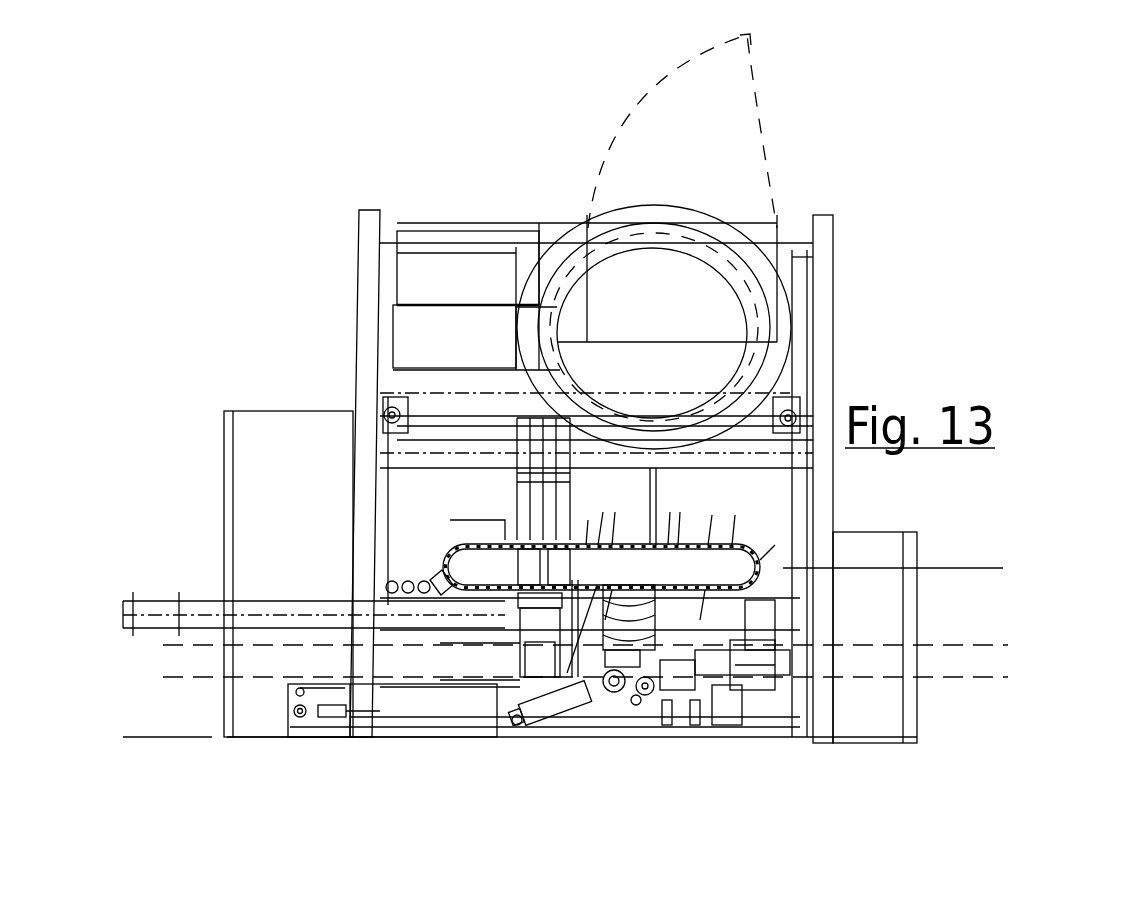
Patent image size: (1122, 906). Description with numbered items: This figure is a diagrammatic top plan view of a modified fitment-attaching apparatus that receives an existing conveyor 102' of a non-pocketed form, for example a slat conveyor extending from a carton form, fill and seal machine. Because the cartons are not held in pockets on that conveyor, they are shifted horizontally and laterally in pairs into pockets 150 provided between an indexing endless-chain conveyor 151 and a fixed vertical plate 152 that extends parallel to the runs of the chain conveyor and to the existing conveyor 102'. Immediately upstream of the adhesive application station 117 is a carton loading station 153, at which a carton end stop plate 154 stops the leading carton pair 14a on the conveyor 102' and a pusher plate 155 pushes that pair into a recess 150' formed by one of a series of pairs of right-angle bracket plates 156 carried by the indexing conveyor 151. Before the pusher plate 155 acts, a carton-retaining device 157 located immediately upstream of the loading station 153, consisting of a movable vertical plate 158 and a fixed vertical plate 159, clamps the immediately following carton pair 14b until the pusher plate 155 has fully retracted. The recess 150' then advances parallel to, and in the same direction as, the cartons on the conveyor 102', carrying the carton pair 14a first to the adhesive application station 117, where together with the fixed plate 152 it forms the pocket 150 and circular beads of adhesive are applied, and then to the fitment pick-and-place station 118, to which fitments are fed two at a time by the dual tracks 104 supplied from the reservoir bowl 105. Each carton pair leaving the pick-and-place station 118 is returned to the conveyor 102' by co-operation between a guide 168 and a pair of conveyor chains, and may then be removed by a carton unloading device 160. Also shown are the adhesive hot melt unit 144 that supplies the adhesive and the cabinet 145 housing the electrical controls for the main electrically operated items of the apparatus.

The adhesive hot melt unit 144 is at (470, 270).
The reservoir bowl 105 is at (768, 309).
The dual tracks 104 is at (528, 488).
The cabinet 145 is at (264, 537).
The guide 168 is at (410, 580).
The right-angle bracket plates 156 is at (505, 540).
The pockets 150 is at (601, 536).
The recess 150' is at (678, 551).
The indexing endless-chain conveyor 151 is at (926, 568).
The immediately following carton pair 14b is at (755, 660).
The fixed vertical plate 159 is at (790, 628).
The existing conveyor 102' is at (1027, 631).
The movable vertical plate 158 is at (795, 700).
The carton unloading device 160 is at (375, 737).
The fitment pick-and-place station 118 is at (538, 672).
The fixed vertical plate 152 is at (575, 700).
The adhesive application station 117 is at (628, 655).
The carton end stop plate 154 is at (668, 700).
The pusher plate 155 is at (688, 700).
The carton loading station 153 is at (690, 690).
The leading carton pair 14a is at (737, 725).
The carton-retaining device 157 is at (750, 690).